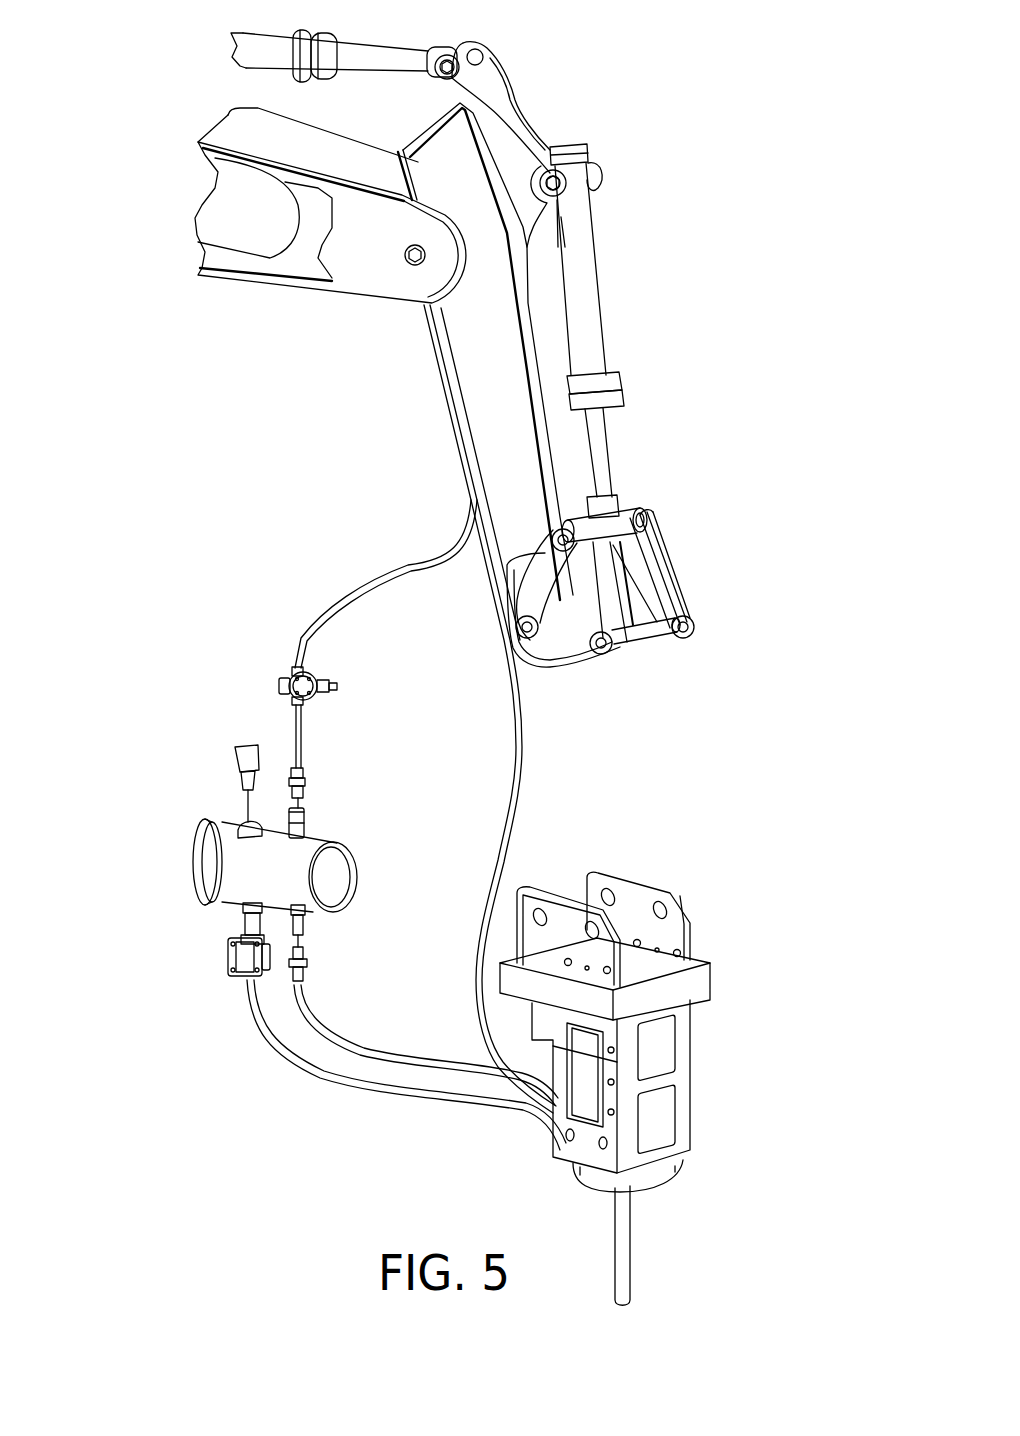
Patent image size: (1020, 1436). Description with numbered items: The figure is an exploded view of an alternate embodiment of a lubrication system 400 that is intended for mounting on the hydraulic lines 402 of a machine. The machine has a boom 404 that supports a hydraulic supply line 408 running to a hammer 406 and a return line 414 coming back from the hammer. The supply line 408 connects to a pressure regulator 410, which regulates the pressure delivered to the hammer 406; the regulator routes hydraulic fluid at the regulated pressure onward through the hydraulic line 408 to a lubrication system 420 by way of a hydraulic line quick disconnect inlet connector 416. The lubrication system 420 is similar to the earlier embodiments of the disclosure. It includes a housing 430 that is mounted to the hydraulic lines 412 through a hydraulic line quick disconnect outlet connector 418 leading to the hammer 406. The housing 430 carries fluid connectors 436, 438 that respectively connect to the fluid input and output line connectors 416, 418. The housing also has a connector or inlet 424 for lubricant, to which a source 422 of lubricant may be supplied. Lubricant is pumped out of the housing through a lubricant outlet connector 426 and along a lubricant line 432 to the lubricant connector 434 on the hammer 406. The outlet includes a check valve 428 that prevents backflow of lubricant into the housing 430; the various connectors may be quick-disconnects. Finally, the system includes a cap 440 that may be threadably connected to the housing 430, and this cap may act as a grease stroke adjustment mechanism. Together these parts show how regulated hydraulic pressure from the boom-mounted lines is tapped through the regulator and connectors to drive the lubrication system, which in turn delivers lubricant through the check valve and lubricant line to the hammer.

The lubrication system 400 is at (650, 70).
The hydraulic lines 402 is at (678, 242).
The boom 404 is at (557, 305).
The hammer 406 is at (695, 1074).
The hydraulic supply line 408 is at (354, 587).
The pressure regulator 410 is at (320, 677).
The hydraulic lines 412 is at (303, 735).
The return line 414 is at (520, 812).
The hydraulic line quick disconnect inlet connector 416 is at (305, 791).
The hydraulic line quick disconnect outlet connector 418 is at (306, 975).
The lubrication system 420 is at (125, 813).
The source of lubricant 422 is at (233, 766).
The lubricant inlet 424 is at (241, 825).
The lubricant outlet connector 426 is at (240, 906).
The check valve 428 is at (226, 948).
The housing 430 is at (241, 901).
The lubricant line 432 is at (318, 1080).
The lubricant connector 434 is at (713, 985).
The fluid connector 436 is at (306, 825).
The fluid connector 438 is at (306, 930).
The cap 440 is at (196, 847).